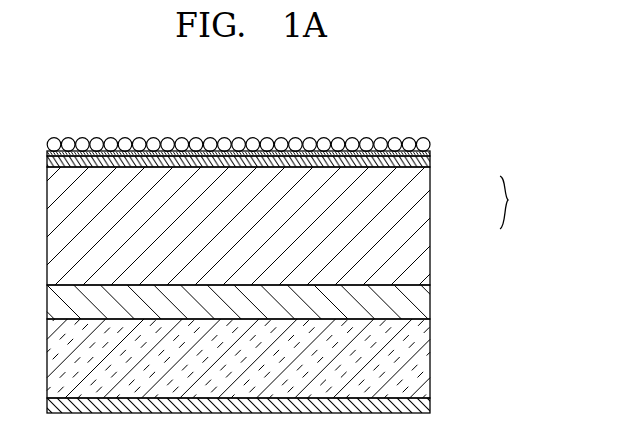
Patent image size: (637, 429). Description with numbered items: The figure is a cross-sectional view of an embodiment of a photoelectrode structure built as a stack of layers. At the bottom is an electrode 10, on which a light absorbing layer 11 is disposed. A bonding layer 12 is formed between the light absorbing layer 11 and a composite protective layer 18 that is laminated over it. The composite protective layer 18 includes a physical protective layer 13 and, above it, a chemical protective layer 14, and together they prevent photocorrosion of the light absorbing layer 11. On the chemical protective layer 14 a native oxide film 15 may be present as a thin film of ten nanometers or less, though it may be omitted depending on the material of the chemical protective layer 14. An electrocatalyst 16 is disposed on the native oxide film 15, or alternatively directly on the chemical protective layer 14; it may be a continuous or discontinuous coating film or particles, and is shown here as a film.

The electrode 10 is at (420, 404).
The light absorbing layer 11 is at (420, 361).
The bonding layer 12 is at (418, 307).
The physical protective layer 13 is at (422, 231).
The chemical protective layer 14 is at (430, 164).
The native oxide film 15 is at (430, 153).
The electrocatalyst 16 is at (422, 146).
The composite protective layer 18 is at (516, 202).